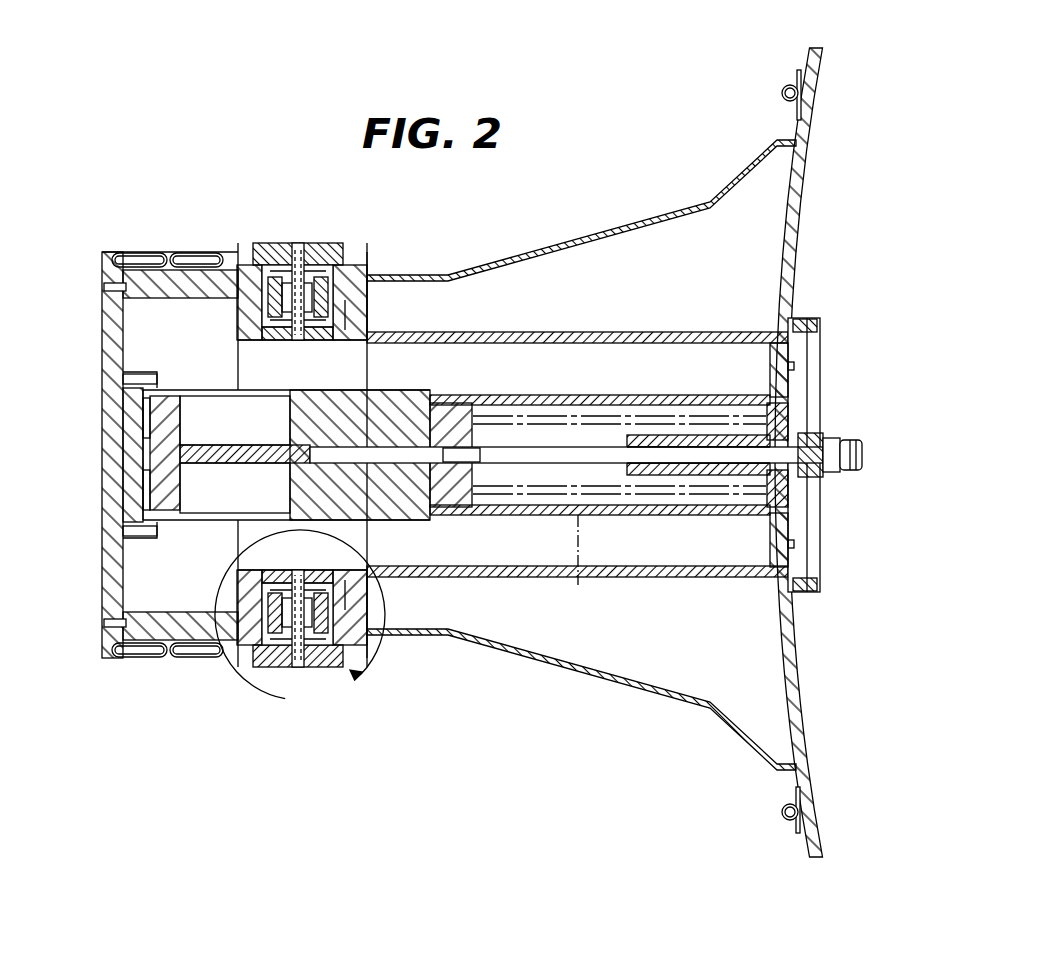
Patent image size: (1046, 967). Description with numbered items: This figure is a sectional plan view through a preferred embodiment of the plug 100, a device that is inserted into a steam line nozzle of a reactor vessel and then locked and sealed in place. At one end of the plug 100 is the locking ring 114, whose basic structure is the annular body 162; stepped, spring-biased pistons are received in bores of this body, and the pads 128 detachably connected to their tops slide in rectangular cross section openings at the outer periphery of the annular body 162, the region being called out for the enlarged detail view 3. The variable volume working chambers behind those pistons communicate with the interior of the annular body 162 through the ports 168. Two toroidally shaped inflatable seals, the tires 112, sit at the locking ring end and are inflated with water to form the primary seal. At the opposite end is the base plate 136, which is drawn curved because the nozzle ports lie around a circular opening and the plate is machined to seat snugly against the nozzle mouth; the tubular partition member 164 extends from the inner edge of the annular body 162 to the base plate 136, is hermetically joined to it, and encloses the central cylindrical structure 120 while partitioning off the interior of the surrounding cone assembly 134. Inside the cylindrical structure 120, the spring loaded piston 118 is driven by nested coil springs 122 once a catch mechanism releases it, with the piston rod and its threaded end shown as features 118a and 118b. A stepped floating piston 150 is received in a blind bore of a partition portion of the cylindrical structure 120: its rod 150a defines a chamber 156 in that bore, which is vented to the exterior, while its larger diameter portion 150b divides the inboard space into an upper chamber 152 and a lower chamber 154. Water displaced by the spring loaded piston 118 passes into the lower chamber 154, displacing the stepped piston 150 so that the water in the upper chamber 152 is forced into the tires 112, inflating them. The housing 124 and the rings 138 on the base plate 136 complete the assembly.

The plug 100 is at (288, 182).
The tires 112 is at (181, 250).
The locking ring 114 is at (365, 252).
The spring loaded piston 118 is at (458, 417).
The shaft extension 118a is at (733, 458).
The nut 118b is at (840, 474).
The cylindrical structure 120 is at (712, 512).
The springs 122 is at (580, 560).
The housing 124 is at (235, 323).
The pads 128 is at (286, 243).
The conical shell 134 is at (528, 252).
The base plate 136 is at (797, 188).
The ring 138 is at (786, 86).
The stepped floating piston 150 is at (150, 460).
The rod 150a is at (138, 505).
The larger diameter portion 150b is at (148, 478).
The upper chamber 152 is at (143, 425).
The lower chamber 154 is at (143, 405).
The chamber 156 is at (327, 450).
The annular body 162 is at (370, 300).
The tubular partition member 164 is at (658, 578).
The ports 168 is at (350, 333).
The detail view FIG. 3 is at (288, 708).